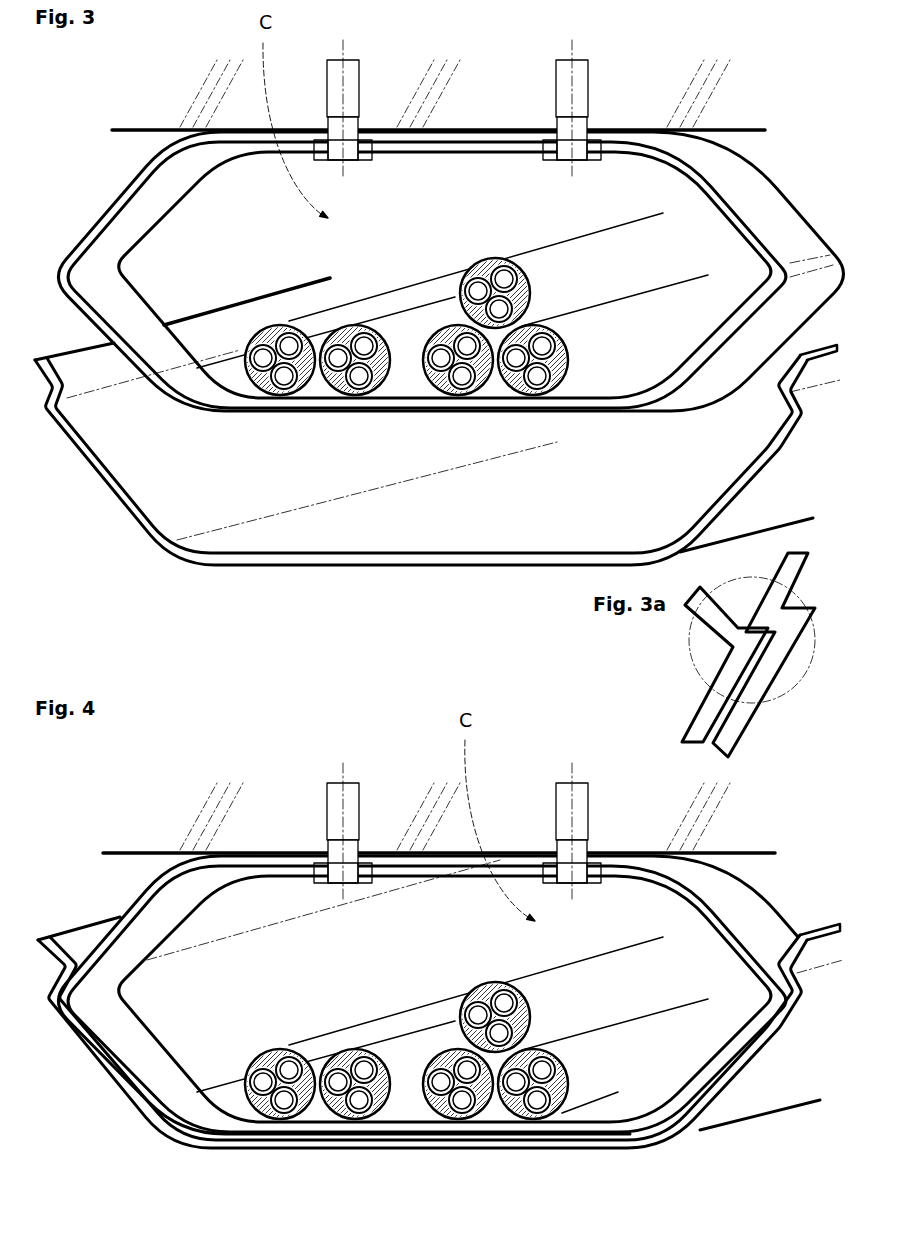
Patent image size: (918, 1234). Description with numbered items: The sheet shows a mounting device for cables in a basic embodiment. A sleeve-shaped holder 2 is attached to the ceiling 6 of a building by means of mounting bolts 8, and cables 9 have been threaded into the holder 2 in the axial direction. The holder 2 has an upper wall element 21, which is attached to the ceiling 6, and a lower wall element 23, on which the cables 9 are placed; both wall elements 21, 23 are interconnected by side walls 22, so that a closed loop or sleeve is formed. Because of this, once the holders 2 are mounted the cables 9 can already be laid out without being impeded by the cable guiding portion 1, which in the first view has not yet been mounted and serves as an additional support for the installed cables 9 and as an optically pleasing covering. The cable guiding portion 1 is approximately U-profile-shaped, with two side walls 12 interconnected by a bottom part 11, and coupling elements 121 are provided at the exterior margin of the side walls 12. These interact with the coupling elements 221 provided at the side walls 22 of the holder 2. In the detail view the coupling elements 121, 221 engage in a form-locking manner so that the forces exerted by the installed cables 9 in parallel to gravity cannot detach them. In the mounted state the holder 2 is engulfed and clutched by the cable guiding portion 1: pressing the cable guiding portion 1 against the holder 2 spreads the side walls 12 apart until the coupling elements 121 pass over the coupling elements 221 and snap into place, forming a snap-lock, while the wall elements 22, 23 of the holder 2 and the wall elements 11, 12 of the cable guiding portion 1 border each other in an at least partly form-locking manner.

In FIG. 3, the cable guiding portion 1 is at (110, 534).
In FIG. 4, the cable guiding portion 1 is at (773, 1082).
In FIG. 3, the holder 2 is at (569, 427).
In FIG. 4, the holder 2 is at (763, 914).
In FIG. 3, the ceiling 6 is at (438, 95).
In FIG. 4, the ceiling 6 is at (439, 818).
In FIG. 3, the mounting bolts 8 is at (362, 90).
In FIG. 4, the mounting bolts 8 is at (362, 812).
In FIG. 3, the cables 9 is at (525, 262).
In FIG. 4, the cables 9 is at (350, 1037).
In FIG. 3, the bottom part 11 is at (470, 512).
In FIG. 3, the side walls 12 is at (205, 445).
In FIG. 3, the upper wall element 21 is at (436, 143).
In FIG. 3, the side walls 22 is at (445, 275).
In FIG. 3, the lower wall element 23 is at (610, 387).
In FIG. 3, the coupling elements 121 is at (93, 373).
In FIG. 3A, the coupling elements 121 is at (771, 655).
In FIG. 4, the coupling elements 121 is at (112, 1000).
In FIG. 3, the coupling elements 221 is at (62, 262).
In FIG. 3A, the coupling elements 221 is at (742, 645).
In FIG. 4, the coupling elements 221 is at (112, 1000).